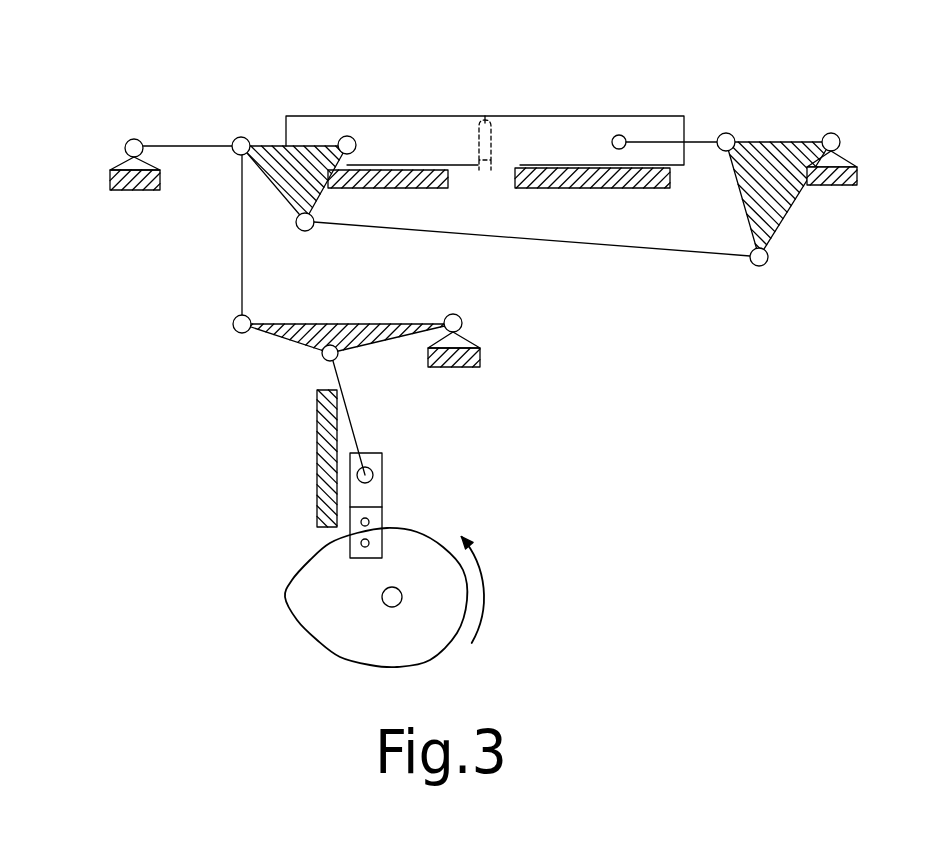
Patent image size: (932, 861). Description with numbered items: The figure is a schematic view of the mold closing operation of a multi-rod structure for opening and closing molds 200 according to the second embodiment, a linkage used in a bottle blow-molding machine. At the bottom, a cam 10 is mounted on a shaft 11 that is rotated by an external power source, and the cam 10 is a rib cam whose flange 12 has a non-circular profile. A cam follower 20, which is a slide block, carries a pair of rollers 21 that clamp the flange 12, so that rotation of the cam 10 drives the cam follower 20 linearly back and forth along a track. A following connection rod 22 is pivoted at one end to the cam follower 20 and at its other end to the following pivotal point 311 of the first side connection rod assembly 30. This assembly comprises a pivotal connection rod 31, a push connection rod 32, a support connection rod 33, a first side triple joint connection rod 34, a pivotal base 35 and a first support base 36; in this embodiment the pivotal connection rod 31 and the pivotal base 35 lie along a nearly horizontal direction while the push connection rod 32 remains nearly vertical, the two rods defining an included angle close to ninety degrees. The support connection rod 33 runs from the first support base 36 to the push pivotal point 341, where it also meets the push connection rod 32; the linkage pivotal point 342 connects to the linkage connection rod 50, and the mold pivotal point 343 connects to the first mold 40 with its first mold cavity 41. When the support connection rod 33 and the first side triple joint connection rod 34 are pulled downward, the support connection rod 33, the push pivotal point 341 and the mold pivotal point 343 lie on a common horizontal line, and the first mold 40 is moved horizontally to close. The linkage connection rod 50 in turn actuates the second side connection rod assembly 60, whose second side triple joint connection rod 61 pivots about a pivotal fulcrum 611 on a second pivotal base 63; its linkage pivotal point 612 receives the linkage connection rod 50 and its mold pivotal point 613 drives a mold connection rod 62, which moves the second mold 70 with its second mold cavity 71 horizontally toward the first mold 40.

The multi-rod structure for opening and closing molds 200 is at (122, 79).
The cam 10 is at (375, 564).
The shaft 11 is at (383, 601).
The flange 12 is at (432, 538).
The cam follower 20 is at (376, 456).
The rollers 21 is at (345, 545).
The following connection rod 22 is at (345, 380).
The first side connection rod assembly 30 is at (311, 212).
The pivotal connection rod 31 is at (390, 322).
The following pivotal point 311 is at (322, 356).
The push connection rod 32 is at (240, 240).
The support connection rod 33 is at (176, 144).
The first side triple joint connection rod 34 is at (273, 163).
The push pivotal point 341 is at (237, 153).
The linkage pivotal point 342 is at (310, 230).
The mold pivotal point 343 is at (348, 135).
The pivotal base 35 is at (462, 330).
The first support base 36 is at (124, 154).
The first mold 40 is at (421, 116).
The first mold cavity 41 is at (478, 168).
The linkage connection rod 50 is at (528, 245).
The second side connection rod assembly 60 is at (770, 178).
The second side triple joint connection rod 61 is at (783, 144).
The pivotal fulcrum 611 is at (838, 139).
The linkage pivotal point 612 is at (760, 267).
The mold pivotal point 613 is at (727, 133).
The mold connection rod 62 is at (718, 135).
The second pivotal base 63 is at (858, 167).
The second mold 70 is at (552, 143).
The second mold cavity 71 is at (493, 168).